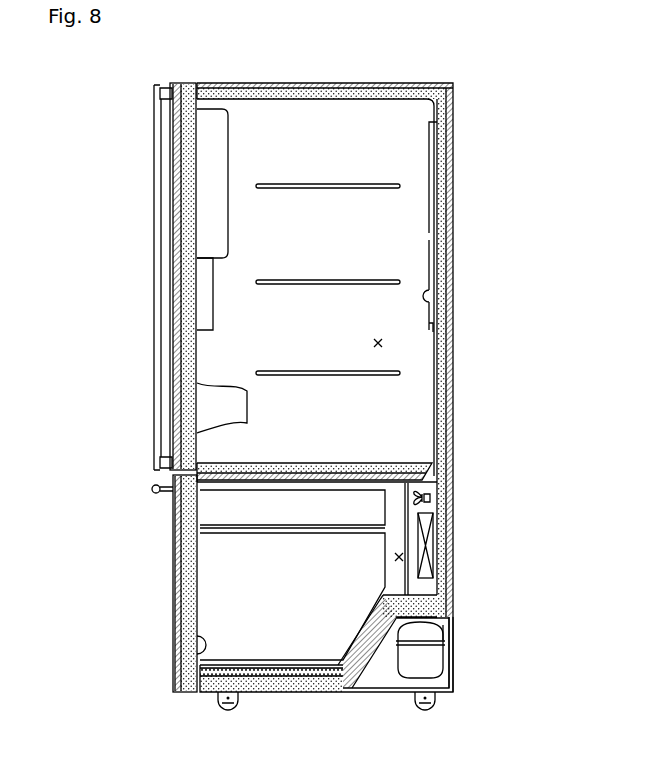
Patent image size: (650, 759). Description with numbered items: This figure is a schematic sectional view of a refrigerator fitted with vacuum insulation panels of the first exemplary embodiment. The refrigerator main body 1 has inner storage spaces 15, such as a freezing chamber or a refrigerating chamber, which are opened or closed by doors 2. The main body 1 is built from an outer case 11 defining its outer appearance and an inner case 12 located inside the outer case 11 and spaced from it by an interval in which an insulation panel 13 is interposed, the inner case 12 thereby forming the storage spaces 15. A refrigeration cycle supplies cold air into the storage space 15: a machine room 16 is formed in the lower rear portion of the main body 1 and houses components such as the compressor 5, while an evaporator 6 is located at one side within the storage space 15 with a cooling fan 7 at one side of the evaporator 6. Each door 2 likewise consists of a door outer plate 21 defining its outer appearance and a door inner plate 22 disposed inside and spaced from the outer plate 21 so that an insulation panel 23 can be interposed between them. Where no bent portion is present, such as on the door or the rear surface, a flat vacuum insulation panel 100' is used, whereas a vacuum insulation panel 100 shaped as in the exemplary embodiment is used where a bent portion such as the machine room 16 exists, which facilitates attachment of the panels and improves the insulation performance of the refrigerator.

The refrigerator main body 1 is at (459, 142).
The door 2 is at (149, 387).
The compressor 5 is at (432, 657).
The evaporator 6 is at (434, 530).
The cooling fan 7 is at (430, 498).
The outer case 11 is at (447, 263).
The inner case 12 is at (432, 298).
The insulation panel 13 is at (447, 97).
The storage space 15 is at (381, 343).
The machine room 16 is at (444, 630).
The door outer plate 21 is at (175, 586).
The door inner plate 22 is at (178, 658).
The insulation panel 23 is at (186, 626).
The vacuum insulation panel 100 is at (318, 665).
The vacuum insulation panel 100' is at (293, 361).